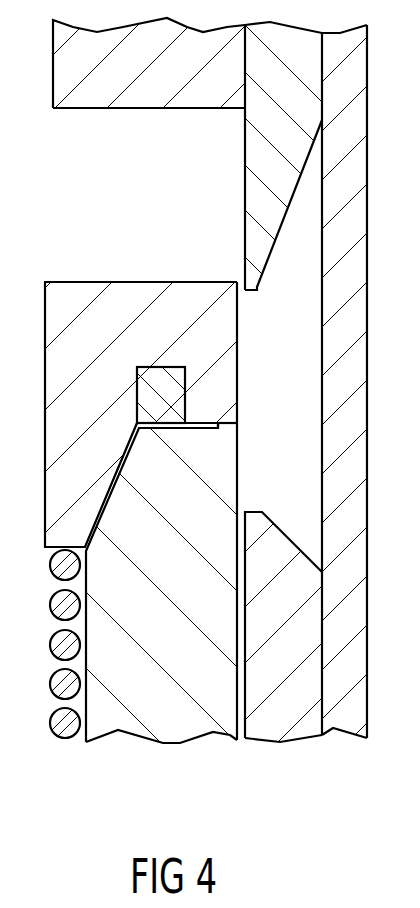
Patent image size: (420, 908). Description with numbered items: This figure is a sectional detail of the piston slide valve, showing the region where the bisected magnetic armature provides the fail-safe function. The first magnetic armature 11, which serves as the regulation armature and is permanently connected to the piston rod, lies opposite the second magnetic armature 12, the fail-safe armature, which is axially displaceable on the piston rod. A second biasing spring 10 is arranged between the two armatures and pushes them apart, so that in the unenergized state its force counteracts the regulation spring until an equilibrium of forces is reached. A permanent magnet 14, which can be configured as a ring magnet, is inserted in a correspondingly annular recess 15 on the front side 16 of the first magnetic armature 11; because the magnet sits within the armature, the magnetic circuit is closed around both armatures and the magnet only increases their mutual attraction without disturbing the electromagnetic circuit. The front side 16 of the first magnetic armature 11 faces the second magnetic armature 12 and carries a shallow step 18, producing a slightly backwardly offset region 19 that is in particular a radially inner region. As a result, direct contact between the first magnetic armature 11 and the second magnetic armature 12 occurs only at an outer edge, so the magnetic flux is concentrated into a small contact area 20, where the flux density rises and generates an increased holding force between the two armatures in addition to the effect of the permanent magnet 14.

The second biasing spring 10 is at (52, 601).
The first magnetic armature 11 is at (72, 293).
The second magnetic armature 12 is at (170, 727).
The permanent magnet 14 is at (150, 377).
The annular recess 15 is at (177, 364).
The front side 16 is at (186, 430).
The shallow step 18 is at (214, 430).
The backwardly offset region 19 is at (204, 421).
The contact area 20 is at (238, 427).